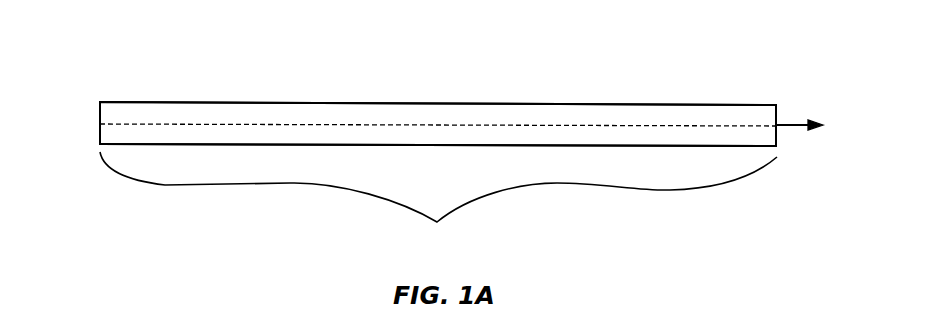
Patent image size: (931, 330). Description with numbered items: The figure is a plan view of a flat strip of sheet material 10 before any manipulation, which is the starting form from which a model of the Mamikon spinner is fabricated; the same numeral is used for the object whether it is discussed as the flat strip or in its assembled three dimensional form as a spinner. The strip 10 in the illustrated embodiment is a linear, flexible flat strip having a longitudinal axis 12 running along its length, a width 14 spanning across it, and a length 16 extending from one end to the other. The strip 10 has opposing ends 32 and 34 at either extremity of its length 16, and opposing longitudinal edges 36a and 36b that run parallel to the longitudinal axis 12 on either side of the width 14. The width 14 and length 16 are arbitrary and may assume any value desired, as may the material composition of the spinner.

The flat strip of sheet material 10 is at (193, 76).
The longitudinal axis 12 is at (813, 107).
The width 14 is at (80, 101).
The length 16 is at (438, 204).
The end 32 is at (71, 107).
The end 34 is at (807, 143).
The longitudinal edge 36a is at (438, 84).
The longitudinal edge 36b is at (438, 166).